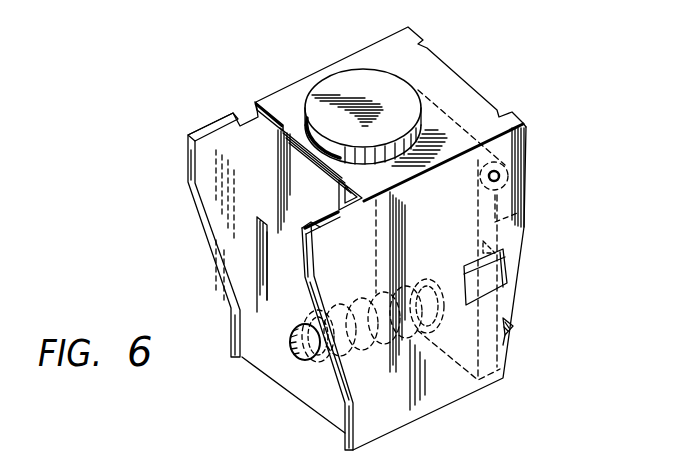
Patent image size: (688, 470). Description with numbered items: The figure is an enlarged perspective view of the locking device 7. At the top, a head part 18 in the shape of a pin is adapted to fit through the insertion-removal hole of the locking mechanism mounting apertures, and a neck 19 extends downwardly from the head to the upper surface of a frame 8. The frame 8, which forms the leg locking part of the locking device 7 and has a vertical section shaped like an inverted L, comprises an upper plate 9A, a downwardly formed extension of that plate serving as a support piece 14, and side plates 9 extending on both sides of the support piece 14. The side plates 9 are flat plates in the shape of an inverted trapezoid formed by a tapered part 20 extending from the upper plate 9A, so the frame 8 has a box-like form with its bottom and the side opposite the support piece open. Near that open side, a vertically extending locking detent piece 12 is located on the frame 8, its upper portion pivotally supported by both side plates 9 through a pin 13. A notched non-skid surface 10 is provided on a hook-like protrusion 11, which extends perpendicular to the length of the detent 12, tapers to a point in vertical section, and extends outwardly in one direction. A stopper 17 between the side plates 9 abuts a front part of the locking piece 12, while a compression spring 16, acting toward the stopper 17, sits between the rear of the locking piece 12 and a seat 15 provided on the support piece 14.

The locking device 7 is at (272, 92).
The frame 8 is at (443, 80).
The side plates 9 is at (246, 176).
The upper plate 9A is at (447, 140).
The notched non-skid surface 10 is at (510, 320).
The hook-like protrusion 11 is at (512, 332).
The locking detent piece 12 is at (520, 213).
The pin 13 is at (500, 176).
The support piece 14 is at (293, 291).
The seat 15 is at (291, 357).
The compression spring 16 is at (391, 343).
The stopper 17 is at (500, 278).
The head part 18 is at (363, 84).
The neck 19 is at (330, 92).
The tapered part 20 is at (208, 250).